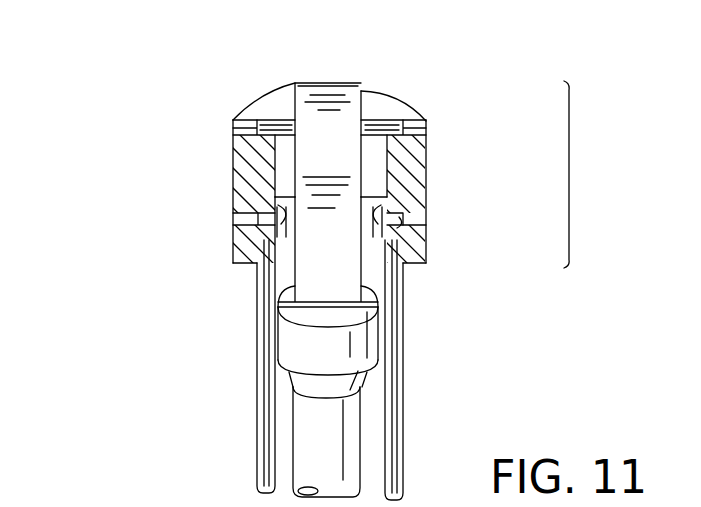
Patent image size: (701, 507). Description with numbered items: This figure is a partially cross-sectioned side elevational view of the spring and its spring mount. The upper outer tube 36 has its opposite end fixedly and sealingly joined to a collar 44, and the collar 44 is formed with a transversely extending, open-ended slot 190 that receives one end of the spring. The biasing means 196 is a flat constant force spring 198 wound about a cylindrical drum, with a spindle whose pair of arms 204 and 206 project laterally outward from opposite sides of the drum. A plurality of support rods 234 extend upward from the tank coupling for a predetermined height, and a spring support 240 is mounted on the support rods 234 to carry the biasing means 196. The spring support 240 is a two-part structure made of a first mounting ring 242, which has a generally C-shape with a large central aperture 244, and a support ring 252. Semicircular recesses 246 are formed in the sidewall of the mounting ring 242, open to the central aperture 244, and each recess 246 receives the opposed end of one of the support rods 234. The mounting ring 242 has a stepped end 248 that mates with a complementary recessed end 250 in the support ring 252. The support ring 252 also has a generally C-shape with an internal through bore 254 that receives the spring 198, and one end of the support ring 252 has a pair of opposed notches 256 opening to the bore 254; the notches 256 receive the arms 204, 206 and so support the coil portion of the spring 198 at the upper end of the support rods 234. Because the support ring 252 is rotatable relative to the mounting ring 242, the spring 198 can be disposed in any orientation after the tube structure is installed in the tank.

The upper outer tube 36 is at (308, 443).
The collar 44 is at (296, 340).
The slot 190 is at (377, 304).
The biasing means 196 is at (292, 27).
The flat constant force spring 198 is at (340, 95).
The arm 204 is at (382, 119).
The arm 206 is at (265, 120).
The support rods 234 is at (262, 388).
The spring support 240 is at (571, 181).
The first mounting ring 242 is at (230, 246).
The central aperture 244 is at (276, 236).
The semicircular recesses 246 is at (257, 266).
The stepped end 248 is at (268, 222).
The recessed end 250 is at (412, 225).
The support ring 252 is at (418, 176).
The through bore 254 is at (272, 157).
The notches 256 is at (254, 127).